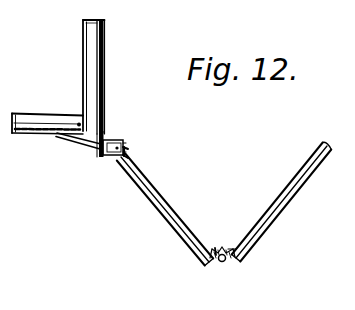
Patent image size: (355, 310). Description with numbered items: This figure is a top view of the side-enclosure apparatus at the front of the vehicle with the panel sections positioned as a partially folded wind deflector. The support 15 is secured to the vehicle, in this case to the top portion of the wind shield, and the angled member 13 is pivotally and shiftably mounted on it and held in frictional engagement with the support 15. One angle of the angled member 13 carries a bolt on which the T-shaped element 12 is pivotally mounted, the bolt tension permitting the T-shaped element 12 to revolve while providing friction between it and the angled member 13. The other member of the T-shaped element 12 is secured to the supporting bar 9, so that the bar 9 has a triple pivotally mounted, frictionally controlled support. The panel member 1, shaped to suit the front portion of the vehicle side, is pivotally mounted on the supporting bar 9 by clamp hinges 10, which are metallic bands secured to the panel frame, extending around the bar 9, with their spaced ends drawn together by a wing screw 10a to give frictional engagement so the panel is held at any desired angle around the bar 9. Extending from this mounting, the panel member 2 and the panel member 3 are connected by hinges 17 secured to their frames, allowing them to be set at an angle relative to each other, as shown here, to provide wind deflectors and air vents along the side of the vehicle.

The panel member 1 is at (78, 140).
The panel member 2 is at (175, 227).
The panel member 3 is at (274, 225).
The supporting bar 9 is at (224, 264).
The clamp hinge 10 is at (90, 151).
The wing screw 10a is at (125, 149).
The T-shaped element 12 is at (106, 157).
The angled member 13 is at (112, 141).
The support 15 is at (103, 136).
The hinge 17 is at (215, 248).